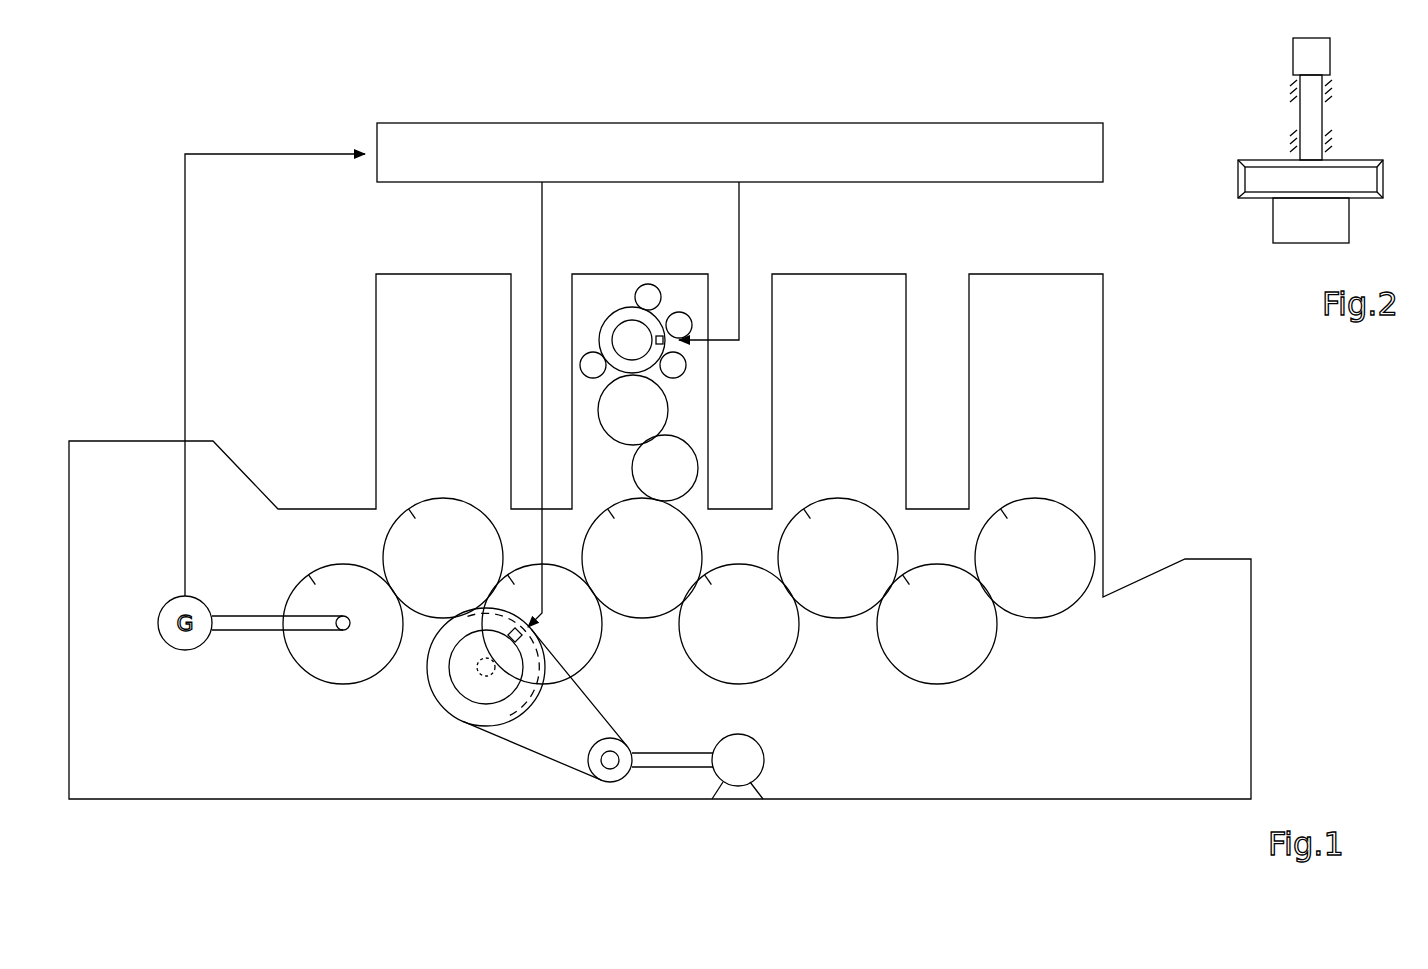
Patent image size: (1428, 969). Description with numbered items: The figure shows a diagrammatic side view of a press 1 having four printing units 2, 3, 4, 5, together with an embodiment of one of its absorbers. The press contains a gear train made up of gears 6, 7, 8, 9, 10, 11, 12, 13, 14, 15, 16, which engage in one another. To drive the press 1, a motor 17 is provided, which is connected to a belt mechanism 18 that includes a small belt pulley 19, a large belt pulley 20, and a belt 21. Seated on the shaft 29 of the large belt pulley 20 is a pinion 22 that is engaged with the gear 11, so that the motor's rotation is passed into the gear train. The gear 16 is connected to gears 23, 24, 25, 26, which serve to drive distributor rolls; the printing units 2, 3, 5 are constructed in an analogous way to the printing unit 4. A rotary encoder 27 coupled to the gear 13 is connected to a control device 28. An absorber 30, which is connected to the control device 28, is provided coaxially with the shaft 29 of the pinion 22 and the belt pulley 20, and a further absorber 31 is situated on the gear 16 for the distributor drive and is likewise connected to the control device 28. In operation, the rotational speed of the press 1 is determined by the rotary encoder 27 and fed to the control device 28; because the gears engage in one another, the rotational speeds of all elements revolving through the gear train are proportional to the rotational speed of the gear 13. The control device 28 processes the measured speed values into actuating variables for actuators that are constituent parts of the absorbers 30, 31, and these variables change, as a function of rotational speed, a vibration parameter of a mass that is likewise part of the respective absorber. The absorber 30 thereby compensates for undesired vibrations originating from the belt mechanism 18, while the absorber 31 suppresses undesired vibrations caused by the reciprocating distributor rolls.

In FIG. 1, the press 1 is at (1140, 431).
In FIG. 1, the printing unit 2 is at (1022, 290).
In FIG. 1, the printing unit 3 is at (828, 290).
In FIG. 1, the printing unit 4 is at (612, 287).
In FIG. 1, the printing unit 5 is at (427, 285).
In FIG. 1, the gear 6 is at (1037, 582).
In FIG. 1, the gear 7 is at (922, 648).
In FIG. 1, the gear 8 is at (837, 592).
In FIG. 1, the gear 9 is at (753, 653).
In FIG. 1, the gear 10 is at (648, 590).
In FIG. 1, the gear 11 is at (578, 625).
In FIG. 1, the gear 12 is at (443, 533).
In FIG. 1, the gear 13 is at (342, 583).
In FIG. 1, the gear 14 is at (653, 467).
In FIG. 1, the gear 15 is at (618, 418).
In FIG. 1, the gear 16 is at (617, 372).
In FIG. 1, the motor 17 is at (738, 786).
In FIG. 1, the belt mechanism 18 is at (490, 752).
In FIG. 1, the small belt pulley 19 is at (608, 773).
In FIG. 1, the large belt pulley 20 is at (433, 697).
In FIG. 2, the large belt pulley 20 is at (1242, 180).
In FIG. 1, the belt 21 is at (533, 753).
In FIG. 1, the pinion 22 is at (473, 668).
In FIG. 2, the pinion 22 is at (1308, 55).
In FIG. 1, the gear 23 is at (677, 367).
In FIG. 1, the gear 24 is at (590, 362).
In FIG. 1, the gear 25 is at (647, 297).
In FIG. 1, the gear 26 is at (677, 322).
In FIG. 1, the rotary encoder 27 is at (185, 650).
In FIG. 1, the control device 28 is at (500, 148).
In FIG. 2, the shaft 29 is at (1308, 118).
In FIG. 1, the absorber 30 is at (465, 703).
In FIG. 2, the absorber 30 is at (1292, 222).
In FIG. 1, the absorber 31 is at (615, 332).